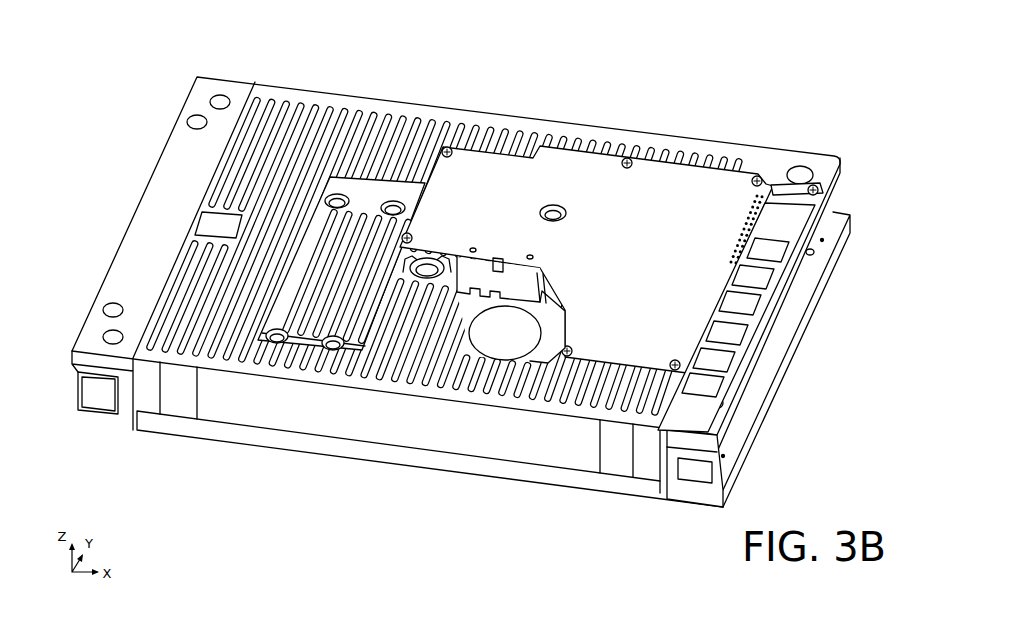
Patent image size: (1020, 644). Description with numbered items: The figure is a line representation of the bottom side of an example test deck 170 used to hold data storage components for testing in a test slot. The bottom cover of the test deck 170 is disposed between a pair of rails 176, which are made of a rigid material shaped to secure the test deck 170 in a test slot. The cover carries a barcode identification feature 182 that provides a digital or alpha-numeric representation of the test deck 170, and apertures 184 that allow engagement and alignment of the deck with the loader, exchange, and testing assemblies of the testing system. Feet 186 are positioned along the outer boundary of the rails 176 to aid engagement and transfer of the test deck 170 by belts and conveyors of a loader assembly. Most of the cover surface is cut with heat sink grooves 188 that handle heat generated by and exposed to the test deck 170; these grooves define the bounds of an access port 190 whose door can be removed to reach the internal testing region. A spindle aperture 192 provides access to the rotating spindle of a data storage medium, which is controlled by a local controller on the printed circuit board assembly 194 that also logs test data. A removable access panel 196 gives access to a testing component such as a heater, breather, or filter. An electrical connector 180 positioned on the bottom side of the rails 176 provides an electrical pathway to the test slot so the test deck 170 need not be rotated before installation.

The test deck 170 is at (760, 90).
The rails 176 is at (154, 177).
The electrical connector 180 is at (773, 308).
The barcode identification feature 182 is at (196, 224).
The apertures 184 is at (189, 116).
The feet 186 is at (220, 94).
The heat sink grooves 188 is at (304, 100).
The top cover access port 190 is at (490, 343).
The spindle aperture 192 is at (431, 256).
The printed circuit board assembly 194 is at (686, 211).
The access panel 196 is at (420, 193).